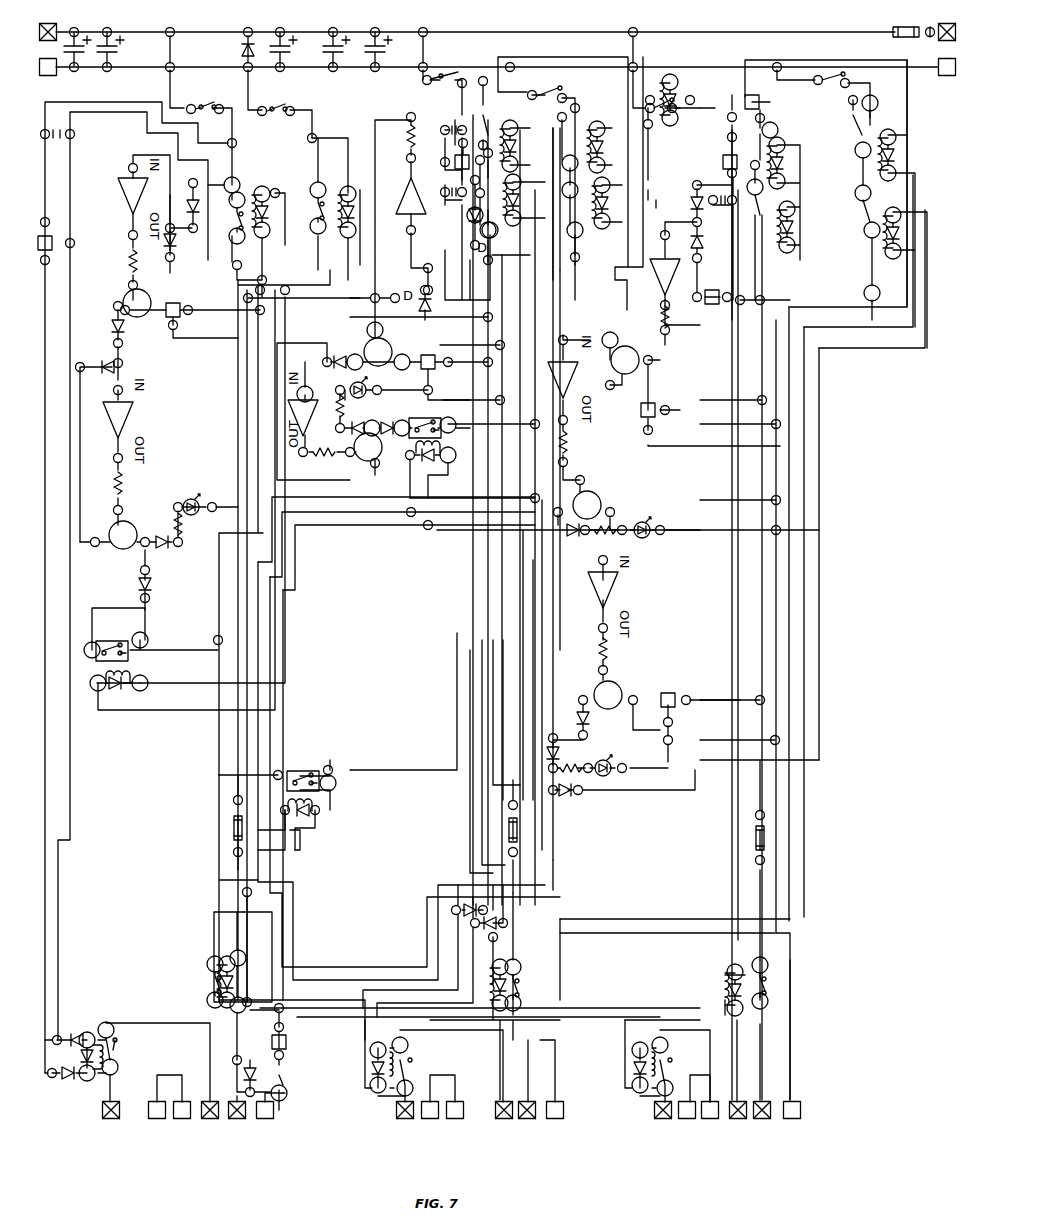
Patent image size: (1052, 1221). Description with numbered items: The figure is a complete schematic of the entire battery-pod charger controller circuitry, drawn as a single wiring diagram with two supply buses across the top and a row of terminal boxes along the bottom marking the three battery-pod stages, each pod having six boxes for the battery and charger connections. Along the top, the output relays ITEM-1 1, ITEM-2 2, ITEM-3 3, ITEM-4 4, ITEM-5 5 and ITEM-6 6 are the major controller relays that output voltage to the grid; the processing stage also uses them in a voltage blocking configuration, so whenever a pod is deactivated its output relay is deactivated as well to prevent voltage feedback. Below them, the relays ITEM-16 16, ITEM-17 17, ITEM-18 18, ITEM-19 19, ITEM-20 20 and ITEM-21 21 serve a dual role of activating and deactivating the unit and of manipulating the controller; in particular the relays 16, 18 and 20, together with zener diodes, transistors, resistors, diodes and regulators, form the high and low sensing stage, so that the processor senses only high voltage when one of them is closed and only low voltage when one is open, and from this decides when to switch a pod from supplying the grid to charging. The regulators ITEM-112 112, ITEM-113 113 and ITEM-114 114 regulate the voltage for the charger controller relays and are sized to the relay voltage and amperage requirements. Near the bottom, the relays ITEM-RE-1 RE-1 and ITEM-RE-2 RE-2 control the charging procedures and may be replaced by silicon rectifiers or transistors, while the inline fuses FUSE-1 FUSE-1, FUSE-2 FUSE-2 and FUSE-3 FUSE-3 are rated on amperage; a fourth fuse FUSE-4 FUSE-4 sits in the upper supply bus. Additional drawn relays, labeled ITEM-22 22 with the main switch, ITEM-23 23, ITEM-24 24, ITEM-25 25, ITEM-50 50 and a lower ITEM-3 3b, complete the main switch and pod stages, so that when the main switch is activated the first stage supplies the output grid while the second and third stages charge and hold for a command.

The controller relay 1 is at (203, 127).
The controller relay 2 is at (286, 104).
The controller relay 3 is at (430, 125).
The relay ITEM-(3) 3b is at (677, 1061).
The controller relay 4 is at (570, 183).
The controller relay 5 is at (666, 91).
The controller relay 6 is at (818, 190).
The sensing relay 16 is at (248, 231).
The controller relay 17 is at (326, 207).
The sensing relay 18 is at (502, 210).
The controller relay 19 is at (591, 202).
The sensing relay 20 is at (764, 219).
The controller relay 21 is at (883, 221).
The main switch ITEM- 22 is at (293, 1057).
The relay ITEM- 23 is at (239, 974).
The relay ITEM- 24 is at (495, 996).
The relay ITEM- 25 is at (757, 1026).
The relay ITEM- 50 is at (153, 649).
The regulator 112 is at (133, 587).
The regulator 113 is at (432, 219).
The regulator 114 is at (691, 204).
The charging relay RE-1 is at (129, 1062).
The charging relay RE-2 is at (434, 1061).
The inline fuse FUSE-1 is at (229, 822).
The inline fuse FUSE-2 is at (503, 836).
The inline fuse FUSE-3 is at (751, 860).
The fuse 4 FUSE-4 is at (917, 50).